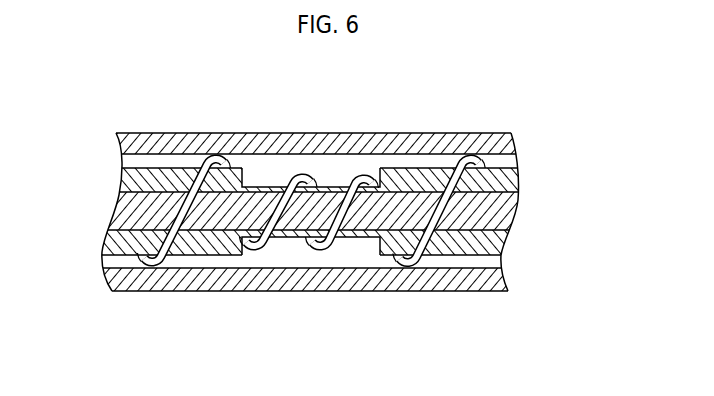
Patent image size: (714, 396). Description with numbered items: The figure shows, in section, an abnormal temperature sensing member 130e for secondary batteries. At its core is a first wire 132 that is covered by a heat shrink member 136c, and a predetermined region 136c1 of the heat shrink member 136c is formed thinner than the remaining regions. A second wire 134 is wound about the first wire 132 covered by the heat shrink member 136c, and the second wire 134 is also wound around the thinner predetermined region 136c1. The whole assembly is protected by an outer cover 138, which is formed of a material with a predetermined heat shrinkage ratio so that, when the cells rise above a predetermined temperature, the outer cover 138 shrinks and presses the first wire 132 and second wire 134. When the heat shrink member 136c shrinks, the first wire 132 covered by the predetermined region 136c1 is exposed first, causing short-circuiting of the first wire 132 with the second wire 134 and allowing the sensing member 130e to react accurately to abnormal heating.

The abnormal temperature sensing member 130e is at (112, 85).
The outer cover 138 is at (323, 148).
The second wire 134 is at (451, 152).
The heat shrink member 136c is at (342, 254).
The predetermined region 136c1 is at (323, 254).
The first wire 132 is at (507, 212).